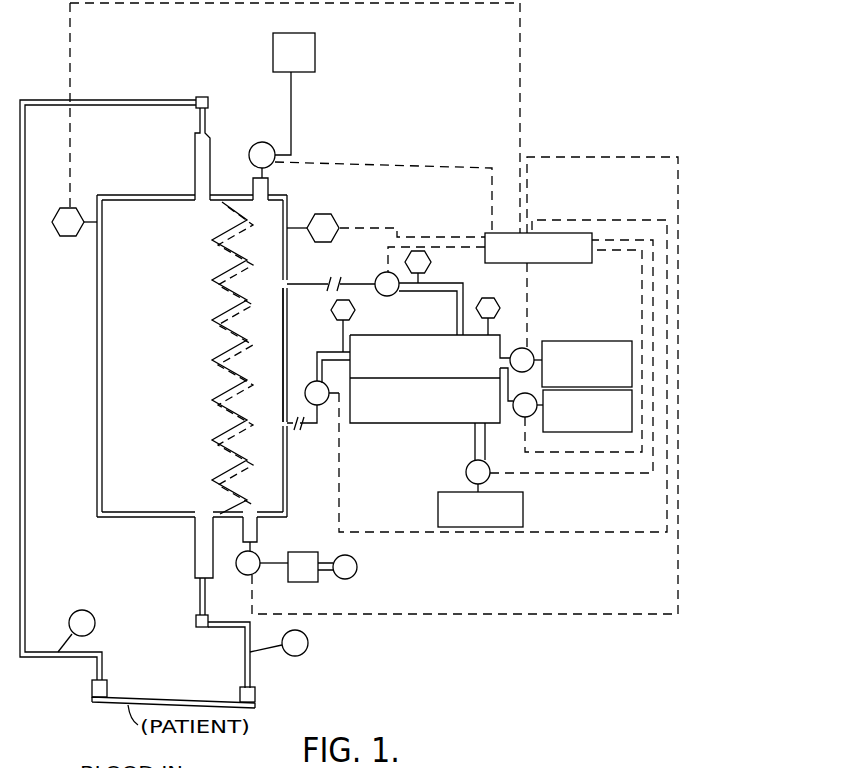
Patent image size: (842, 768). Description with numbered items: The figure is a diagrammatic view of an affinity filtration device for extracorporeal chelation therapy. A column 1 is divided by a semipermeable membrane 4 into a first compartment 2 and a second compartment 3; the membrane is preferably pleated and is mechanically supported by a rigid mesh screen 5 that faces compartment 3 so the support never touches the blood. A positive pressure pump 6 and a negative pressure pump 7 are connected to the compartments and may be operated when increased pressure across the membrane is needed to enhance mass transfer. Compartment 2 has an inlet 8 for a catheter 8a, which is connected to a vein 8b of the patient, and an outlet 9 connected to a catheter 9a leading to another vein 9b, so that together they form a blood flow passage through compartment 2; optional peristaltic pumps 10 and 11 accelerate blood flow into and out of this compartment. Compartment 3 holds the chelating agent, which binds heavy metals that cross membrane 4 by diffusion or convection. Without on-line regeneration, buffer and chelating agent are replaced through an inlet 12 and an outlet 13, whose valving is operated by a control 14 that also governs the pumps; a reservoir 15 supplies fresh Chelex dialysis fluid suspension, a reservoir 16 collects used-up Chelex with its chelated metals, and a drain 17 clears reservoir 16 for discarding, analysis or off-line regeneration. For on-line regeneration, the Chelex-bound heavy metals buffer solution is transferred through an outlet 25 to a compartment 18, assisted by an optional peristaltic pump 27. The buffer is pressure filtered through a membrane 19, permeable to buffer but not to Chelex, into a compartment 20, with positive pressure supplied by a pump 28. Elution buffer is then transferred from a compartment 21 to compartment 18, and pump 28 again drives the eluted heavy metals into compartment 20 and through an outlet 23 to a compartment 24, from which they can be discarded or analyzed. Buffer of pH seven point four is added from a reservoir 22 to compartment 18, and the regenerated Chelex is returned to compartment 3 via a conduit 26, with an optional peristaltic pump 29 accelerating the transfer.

The column 1 is at (92, 295).
The first compartment 2 is at (108, 344).
The second compartment 3 is at (276, 338).
The semipermeable membrane 4 is at (213, 280).
The rigid mesh screen 5 is at (235, 245).
The positive pressure pump 6 is at (58, 232).
The negative pressure pump 7 is at (327, 213).
The inlet 8 is at (195, 163).
The catheter 8a is at (208, 103).
The vein 8b is at (107, 681).
The outlet 9 is at (195, 545).
The catheter 9a is at (196, 623).
The vein 9b is at (255, 694).
The peristaltic pump 10 is at (95, 618).
The peristaltic pump 11 is at (306, 650).
The inlet 12 is at (268, 188).
The outlet 13 is at (257, 530).
The control 14 is at (505, 232).
The reservoir 15 is at (298, 33).
The reservoir 16 is at (290, 583).
The drain 17 is at (334, 578).
The compartment 18 is at (387, 337).
The membrane 19 is at (362, 378).
The compartment 20 is at (375, 416).
The compartment 21 is at (555, 341).
The reservoir 22 is at (580, 432).
The outlet 23 is at (486, 443).
The compartment 24 is at (523, 498).
The outlet 25 is at (288, 430).
The conduit 26 is at (327, 280).
The peristaltic pump 27 is at (355, 311).
The pump 28 is at (486, 298).
The peristaltic pump 29 is at (431, 262).